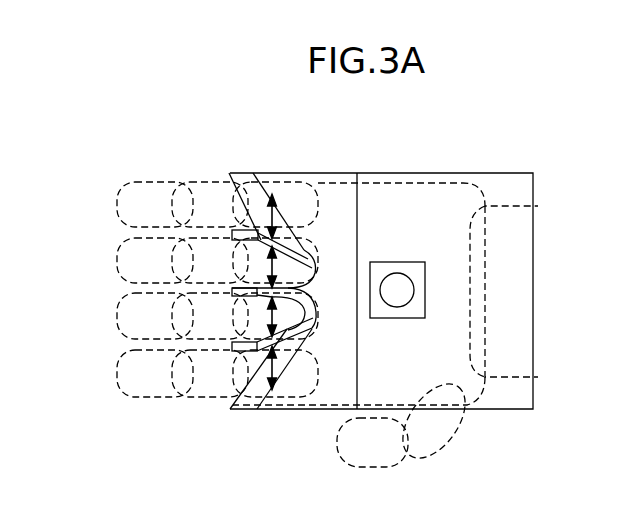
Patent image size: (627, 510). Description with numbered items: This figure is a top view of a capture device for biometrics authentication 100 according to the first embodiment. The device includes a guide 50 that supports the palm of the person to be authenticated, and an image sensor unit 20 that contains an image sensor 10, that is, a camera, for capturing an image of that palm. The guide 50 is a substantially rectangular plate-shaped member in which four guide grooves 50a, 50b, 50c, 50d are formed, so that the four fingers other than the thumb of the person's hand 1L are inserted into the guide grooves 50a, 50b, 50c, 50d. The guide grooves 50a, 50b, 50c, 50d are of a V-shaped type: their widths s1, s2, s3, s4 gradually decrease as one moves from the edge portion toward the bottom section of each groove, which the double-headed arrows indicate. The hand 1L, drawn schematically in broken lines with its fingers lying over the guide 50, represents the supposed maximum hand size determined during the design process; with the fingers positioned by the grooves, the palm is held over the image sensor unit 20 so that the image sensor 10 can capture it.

The capture device for biometrics authentication 100 is at (530, 143).
The image sensor unit 20 is at (382, 173).
The image sensor 10 is at (397, 262).
The person's hand 1L is at (150, 177).
The guide 50 is at (185, 291).
The guide groove 50a is at (222, 178).
The guide groove 50b is at (236, 243).
The guide groove 50c is at (233, 343).
The guide groove 50d is at (230, 409).
The width s1 is at (262, 218).
The width s2 is at (262, 270).
The width s3 is at (262, 310).
The width s4 is at (262, 368).